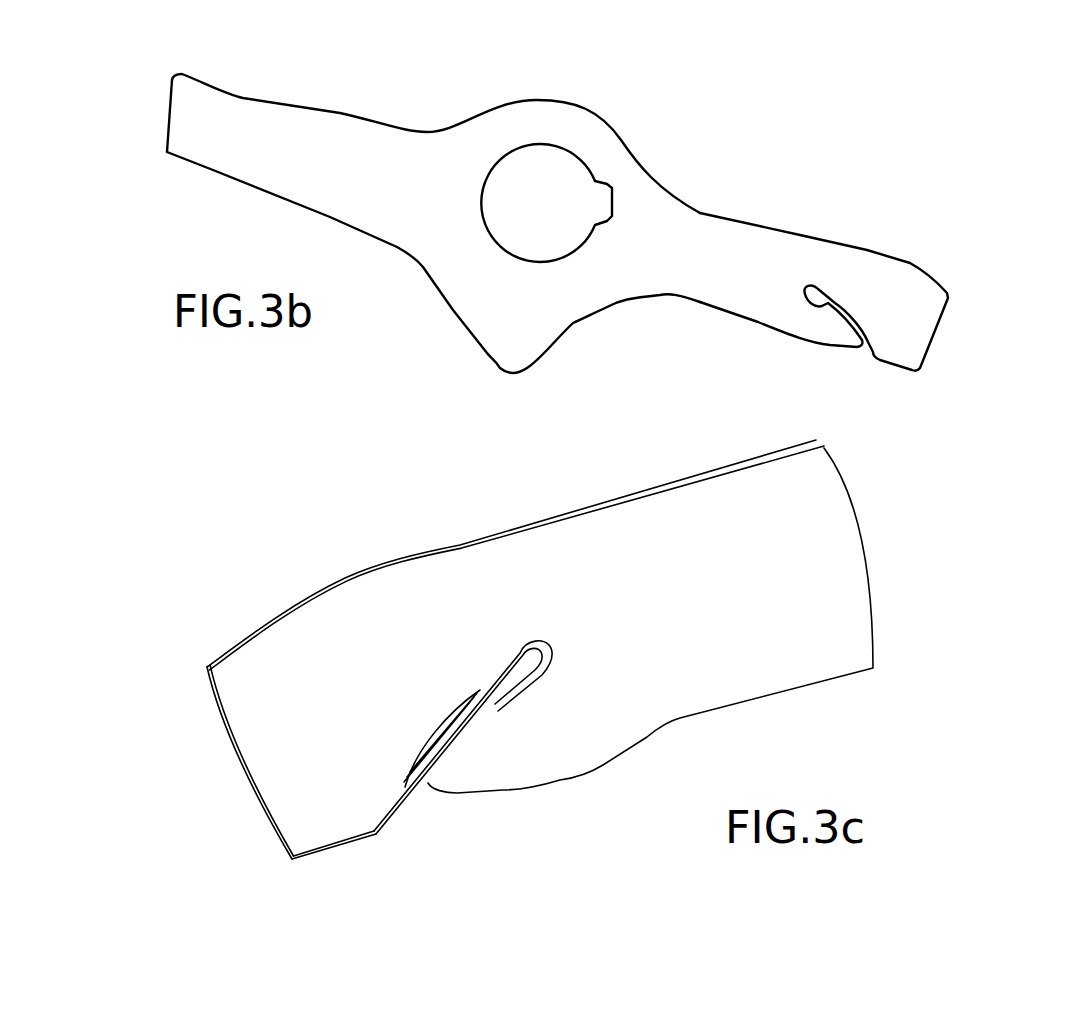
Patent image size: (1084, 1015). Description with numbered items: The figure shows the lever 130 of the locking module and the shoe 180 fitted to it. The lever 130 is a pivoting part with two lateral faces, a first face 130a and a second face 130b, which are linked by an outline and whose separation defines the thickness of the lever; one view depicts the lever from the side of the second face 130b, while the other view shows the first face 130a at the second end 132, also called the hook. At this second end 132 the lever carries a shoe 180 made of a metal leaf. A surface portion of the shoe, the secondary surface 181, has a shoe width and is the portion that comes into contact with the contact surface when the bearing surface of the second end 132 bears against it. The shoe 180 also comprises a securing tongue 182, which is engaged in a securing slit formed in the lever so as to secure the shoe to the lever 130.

In FIG. 3B, the lever 130 is at (146, 65).
In FIG. 3C, the first face 130a is at (287, 640).
In FIG. 3B, the second face 130b is at (735, 245).
In FIG. 3C, the second end 132 is at (258, 733).
In FIG. 3C, the shoe 180 is at (380, 840).
In FIG. 3C, the secondary surface 181 is at (340, 857).
In FIG. 3C, the securing tongue 182 is at (438, 763).